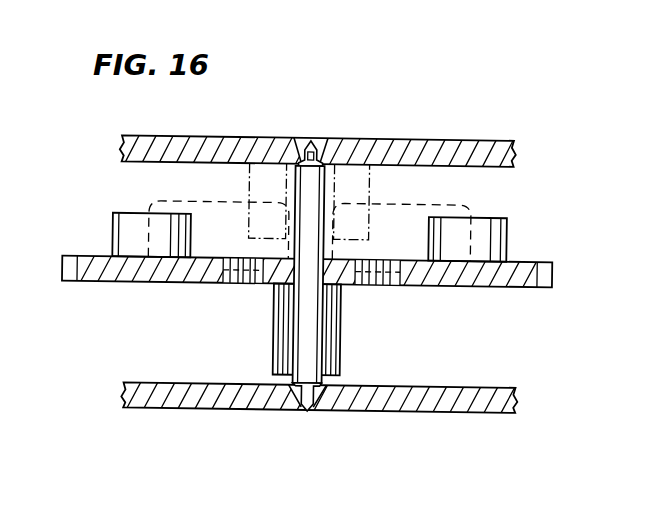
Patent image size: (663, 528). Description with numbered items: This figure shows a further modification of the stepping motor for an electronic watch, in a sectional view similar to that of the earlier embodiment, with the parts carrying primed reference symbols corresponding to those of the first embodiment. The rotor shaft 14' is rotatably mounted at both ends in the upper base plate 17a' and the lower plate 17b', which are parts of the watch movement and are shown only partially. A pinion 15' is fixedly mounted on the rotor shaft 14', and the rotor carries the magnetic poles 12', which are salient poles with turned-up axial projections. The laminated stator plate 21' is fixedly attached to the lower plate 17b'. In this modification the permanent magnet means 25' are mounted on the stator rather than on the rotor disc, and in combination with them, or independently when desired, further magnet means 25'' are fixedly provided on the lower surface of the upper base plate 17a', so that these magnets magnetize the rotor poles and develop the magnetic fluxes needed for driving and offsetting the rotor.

The upper base plate 17a' is at (312, 137).
The lower plate 17b' is at (313, 415).
The stator plate 21' is at (329, 275).
The magnetic poles 12' is at (311, 287).
The rotor shaft 14' is at (276, 276).
The pinion 15' is at (328, 329).
The permanent magnet means 25' is at (312, 230).
The further magnet means 25'' is at (309, 175).